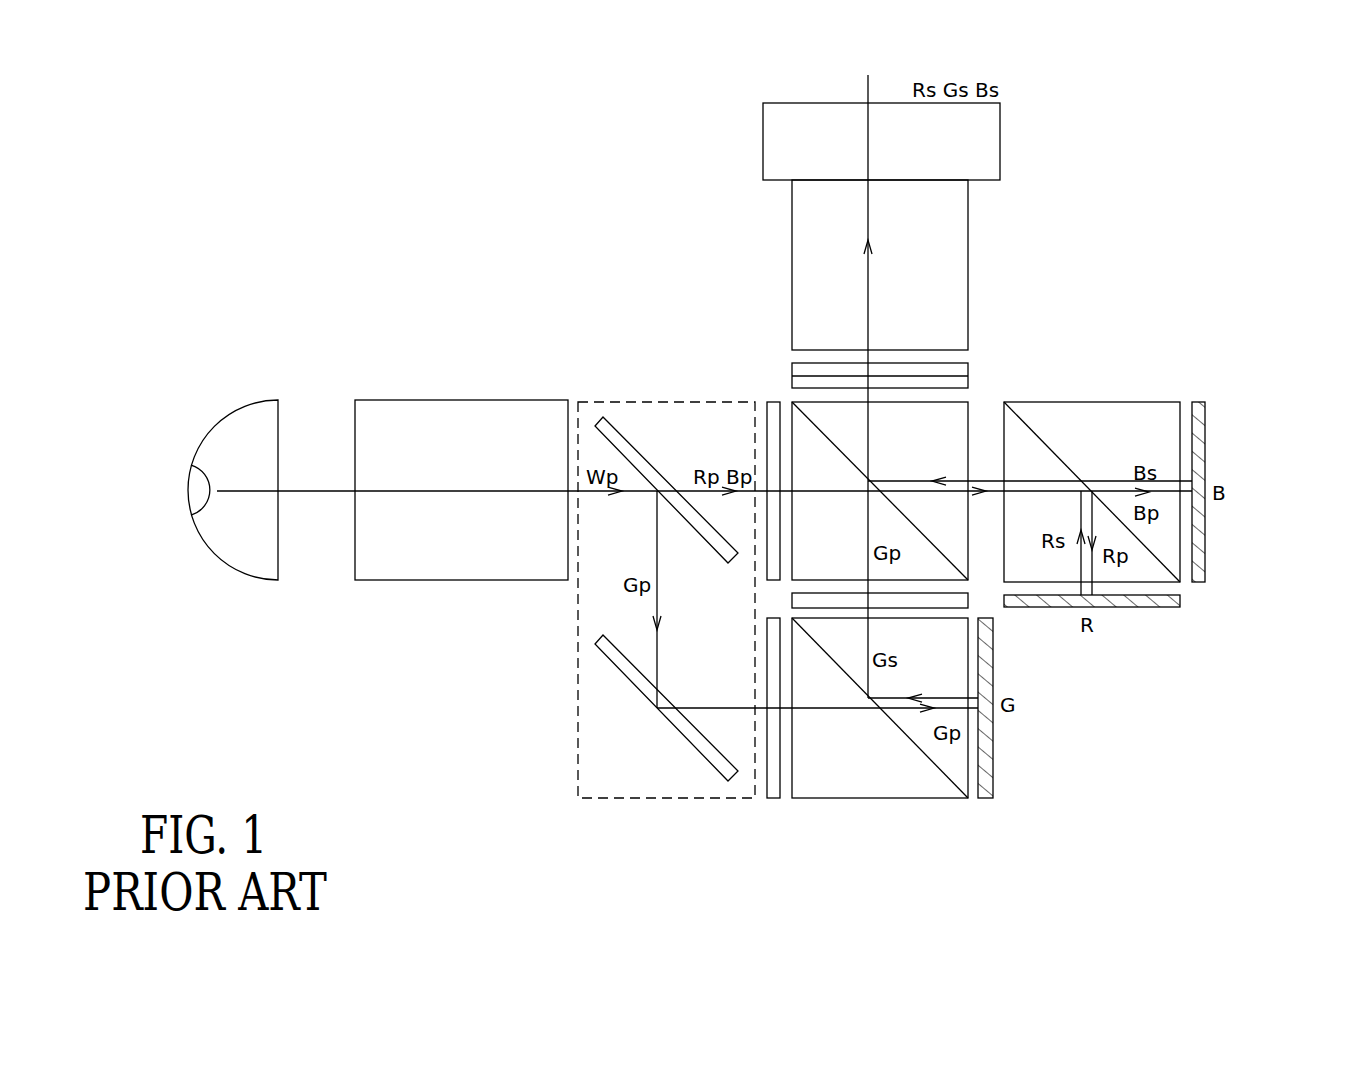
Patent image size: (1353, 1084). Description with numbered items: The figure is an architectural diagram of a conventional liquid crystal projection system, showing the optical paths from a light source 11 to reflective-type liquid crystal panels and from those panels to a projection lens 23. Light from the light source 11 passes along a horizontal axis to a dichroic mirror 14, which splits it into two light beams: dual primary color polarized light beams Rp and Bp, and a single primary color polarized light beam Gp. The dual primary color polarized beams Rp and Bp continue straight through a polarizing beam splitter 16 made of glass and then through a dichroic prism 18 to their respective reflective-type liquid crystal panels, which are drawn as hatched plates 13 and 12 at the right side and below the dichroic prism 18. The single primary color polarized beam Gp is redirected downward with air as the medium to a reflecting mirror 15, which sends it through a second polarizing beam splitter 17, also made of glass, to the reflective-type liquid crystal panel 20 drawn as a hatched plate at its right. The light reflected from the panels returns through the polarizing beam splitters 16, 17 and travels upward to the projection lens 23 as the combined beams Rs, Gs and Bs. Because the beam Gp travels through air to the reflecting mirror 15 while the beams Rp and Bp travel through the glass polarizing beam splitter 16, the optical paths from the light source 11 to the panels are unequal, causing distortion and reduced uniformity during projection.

The light source 11 is at (228, 567).
The red reflective LCD panel 12 is at (1180, 601).
The blue reflective LCD panel 13 is at (1207, 437).
The dichroic mirror 14 is at (632, 438).
The reflecting mirror 15 is at (612, 667).
The polarizing beam splitter 16 is at (968, 400).
The polarizing beam splitter 17 is at (940, 775).
The dichroic prism 18 is at (1093, 400).
The reflective-type liquid crystal panel 20 is at (995, 797).
The projection lens 23 is at (1000, 140).